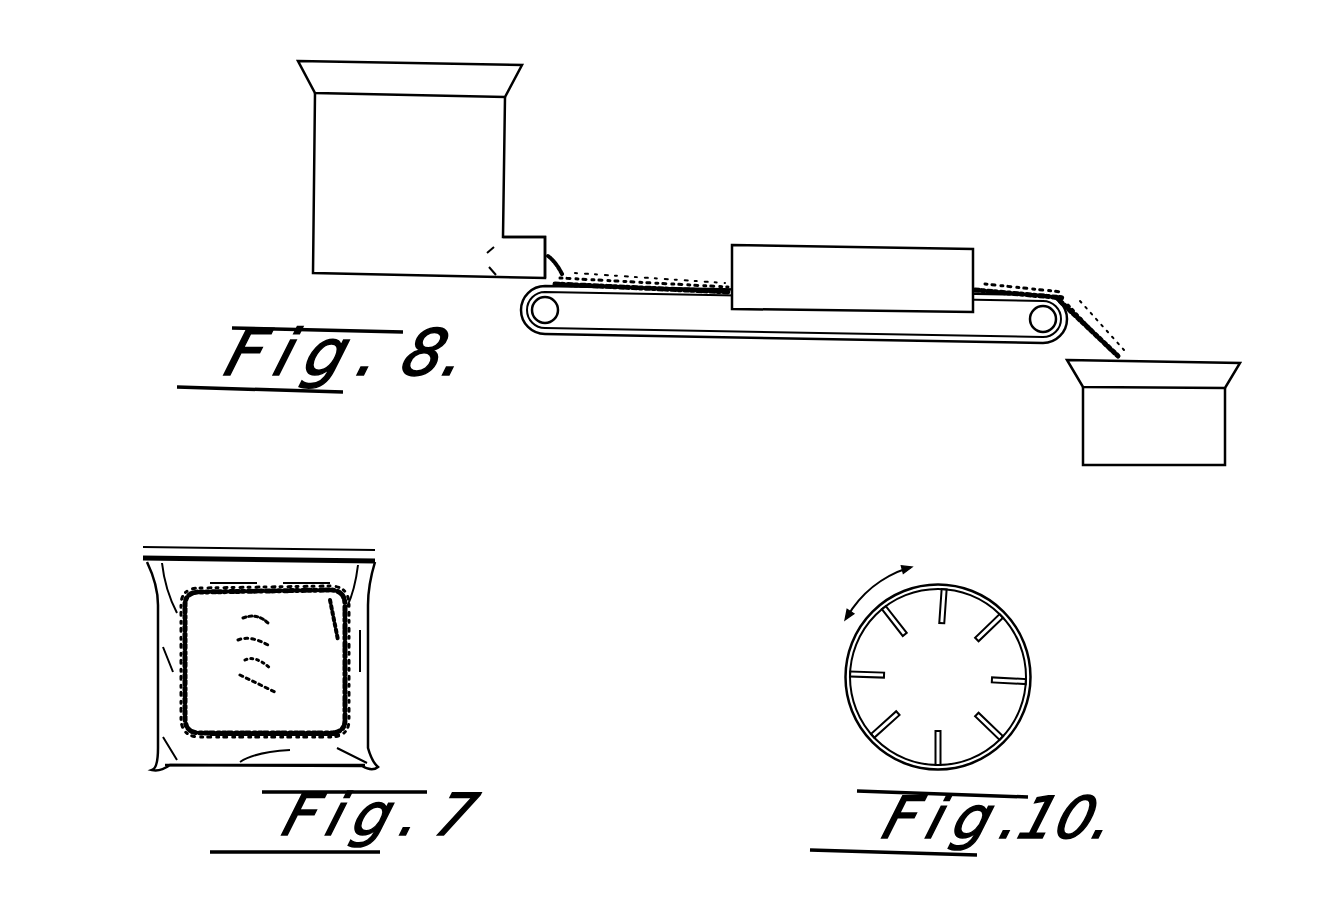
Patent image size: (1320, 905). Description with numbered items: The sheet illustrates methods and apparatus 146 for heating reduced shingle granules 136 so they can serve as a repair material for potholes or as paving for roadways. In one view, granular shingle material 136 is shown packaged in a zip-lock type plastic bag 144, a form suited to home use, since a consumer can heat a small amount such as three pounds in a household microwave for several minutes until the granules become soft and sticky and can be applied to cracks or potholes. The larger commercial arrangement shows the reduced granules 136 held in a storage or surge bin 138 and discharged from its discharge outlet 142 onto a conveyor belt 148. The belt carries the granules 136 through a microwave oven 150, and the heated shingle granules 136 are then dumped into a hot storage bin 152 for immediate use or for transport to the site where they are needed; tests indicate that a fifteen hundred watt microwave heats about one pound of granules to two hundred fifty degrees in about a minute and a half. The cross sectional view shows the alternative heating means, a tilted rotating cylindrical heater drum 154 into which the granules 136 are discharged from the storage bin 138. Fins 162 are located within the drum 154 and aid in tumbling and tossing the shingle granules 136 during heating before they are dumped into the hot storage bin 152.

In FIG. 8, the reduced shingle granules 136 is at (628, 273).
In FIG. 7, the reduced shingle granules 136 is at (297, 672).
In FIG. 8, the storage or surge bin 138 is at (328, 143).
In FIG. 8, the discharge outlet 142 is at (522, 237).
In FIG. 7, the plastic bag 144 is at (155, 656).
In FIG. 8, the apparatus for heating the reduced shingle granules 146 is at (772, 247).
In FIG. 8, the conveyor belt 148 is at (628, 338).
In FIG. 8, the microwave oven 150 is at (878, 272).
In FIG. 8, the hot storage bin 152 is at (1228, 413).
In FIG. 10, the rotating cylindrical heater drum 154 is at (928, 583).
In FIG. 10, the fins 162 is at (992, 631).